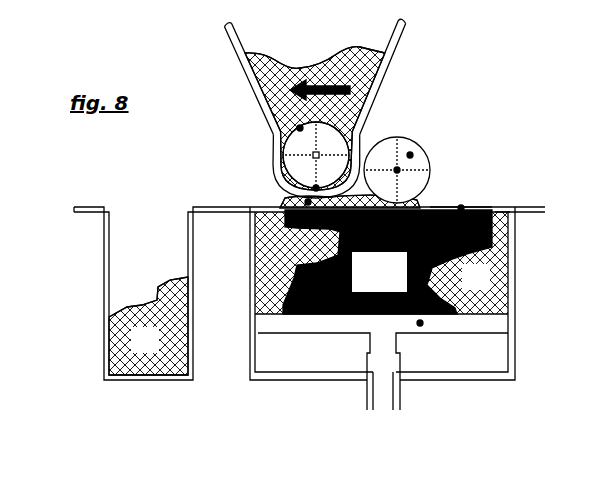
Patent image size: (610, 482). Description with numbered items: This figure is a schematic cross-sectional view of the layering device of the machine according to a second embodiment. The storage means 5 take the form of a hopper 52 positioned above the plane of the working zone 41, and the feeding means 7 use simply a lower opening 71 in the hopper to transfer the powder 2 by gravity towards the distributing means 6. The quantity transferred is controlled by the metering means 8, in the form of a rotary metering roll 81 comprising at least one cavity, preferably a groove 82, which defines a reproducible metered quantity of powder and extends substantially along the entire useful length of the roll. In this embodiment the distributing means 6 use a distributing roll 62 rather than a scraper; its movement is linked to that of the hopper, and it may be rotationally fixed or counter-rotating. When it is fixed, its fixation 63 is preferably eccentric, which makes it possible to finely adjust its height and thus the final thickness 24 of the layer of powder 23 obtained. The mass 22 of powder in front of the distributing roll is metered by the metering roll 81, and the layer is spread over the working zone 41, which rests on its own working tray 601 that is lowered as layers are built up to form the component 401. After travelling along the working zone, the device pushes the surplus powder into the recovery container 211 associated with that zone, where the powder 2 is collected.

The powder 2 is at (308, 293).
The storage means 5 is at (310, 105).
The distributing means 6 is at (420, 142).
The feeding means 7 is at (263, 158).
The metering means 8 is at (262, 126).
The mass of powder 22 is at (308, 202).
The layer of powder 23 is at (461, 208).
The final thickness of the layer of powder 24 is at (502, 211).
The working zone 41 is at (411, 276).
The hopper 52 is at (228, 27).
The distributing roll 62 is at (410, 155).
The fixation 63 is at (397, 170).
The lower opening 71 is at (316, 188).
The metering roll 81 is at (300, 128).
The groove 82 is at (350, 145).
The recovery container 211 is at (164, 293).
The component 401 is at (387, 262).
The working tray 601 is at (420, 323).